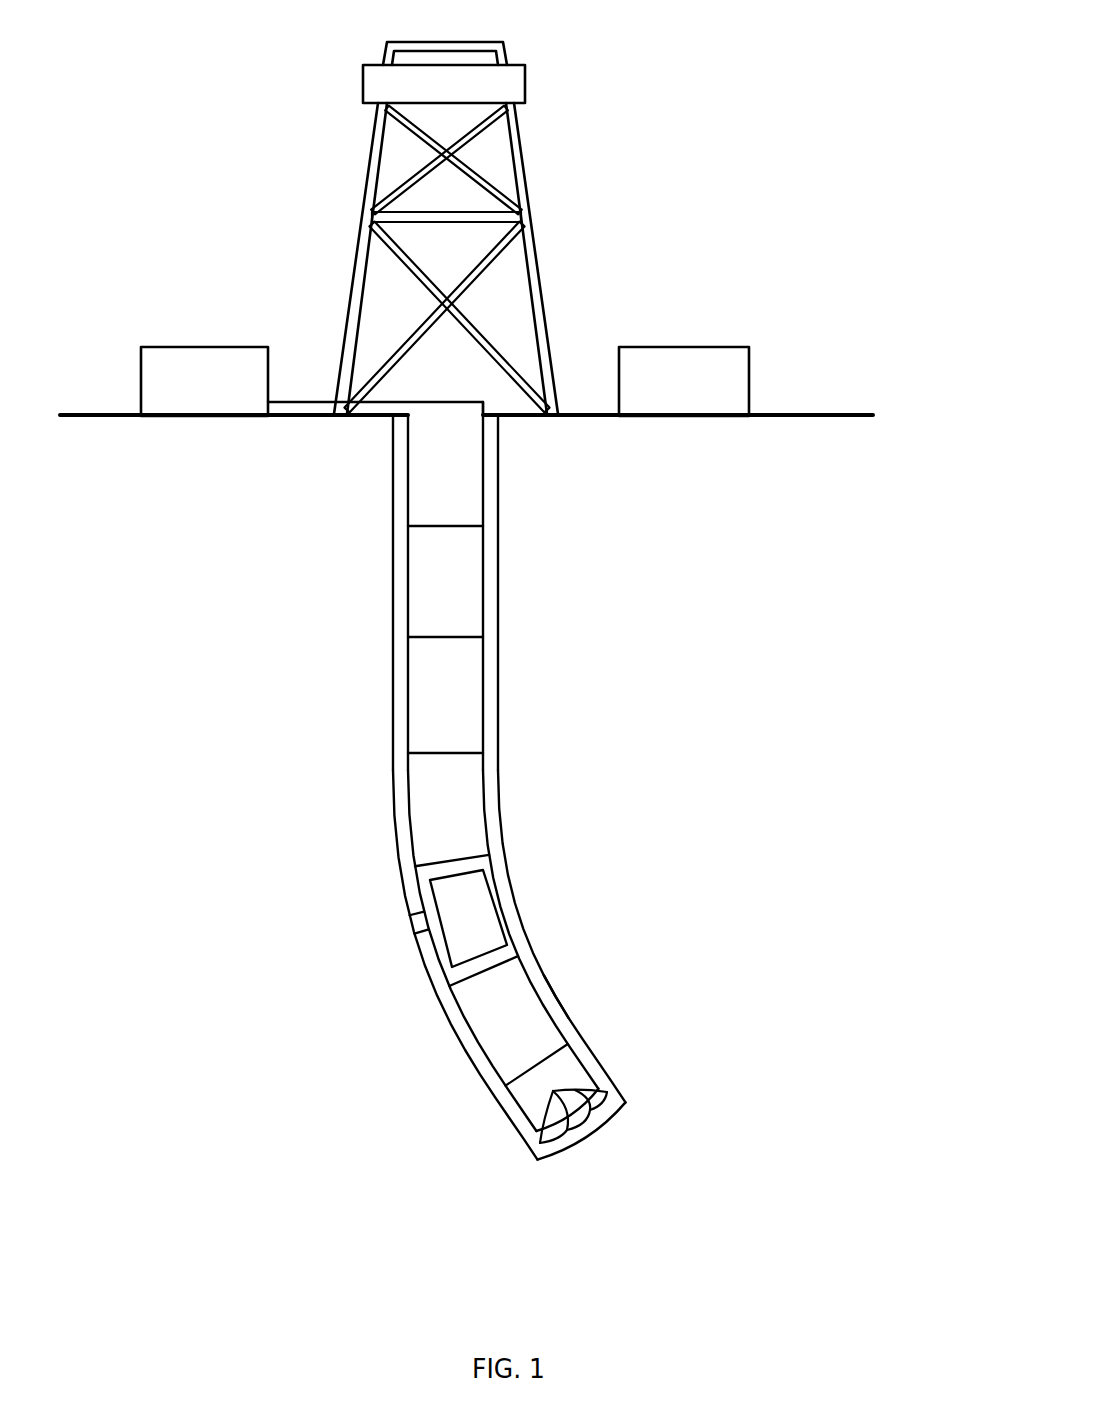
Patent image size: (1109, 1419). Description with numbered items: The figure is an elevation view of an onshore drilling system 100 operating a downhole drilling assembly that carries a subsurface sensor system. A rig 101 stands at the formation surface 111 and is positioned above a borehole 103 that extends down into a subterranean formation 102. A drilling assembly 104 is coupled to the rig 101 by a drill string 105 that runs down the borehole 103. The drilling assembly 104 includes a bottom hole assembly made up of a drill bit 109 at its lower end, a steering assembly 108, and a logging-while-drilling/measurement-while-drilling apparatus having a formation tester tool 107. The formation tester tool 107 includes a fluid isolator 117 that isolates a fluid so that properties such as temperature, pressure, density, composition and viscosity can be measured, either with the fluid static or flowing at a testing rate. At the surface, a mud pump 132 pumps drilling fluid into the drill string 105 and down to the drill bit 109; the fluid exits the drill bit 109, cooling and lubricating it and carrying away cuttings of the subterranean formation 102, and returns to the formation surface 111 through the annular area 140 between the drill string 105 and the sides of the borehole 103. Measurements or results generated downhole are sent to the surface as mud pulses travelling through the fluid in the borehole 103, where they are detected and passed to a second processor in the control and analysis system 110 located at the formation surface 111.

The drilling system 100 is at (714, 134).
The rig 101 is at (525, 80).
The subterranean formation 102 is at (713, 614).
The borehole 103 is at (393, 583).
The drilling assembly 104 is at (345, 694).
The drill string 105 is at (482, 663).
The formation tester tool 107 is at (505, 895).
The steering assembly 108 is at (548, 1015).
The drill bit 109 is at (620, 1110).
The control and analysis system 110 is at (703, 396).
The formation surface 111 is at (825, 412).
The fluid isolator 117 is at (410, 921).
The mud pump 132 is at (223, 396).
The annular area 140 is at (489, 792).